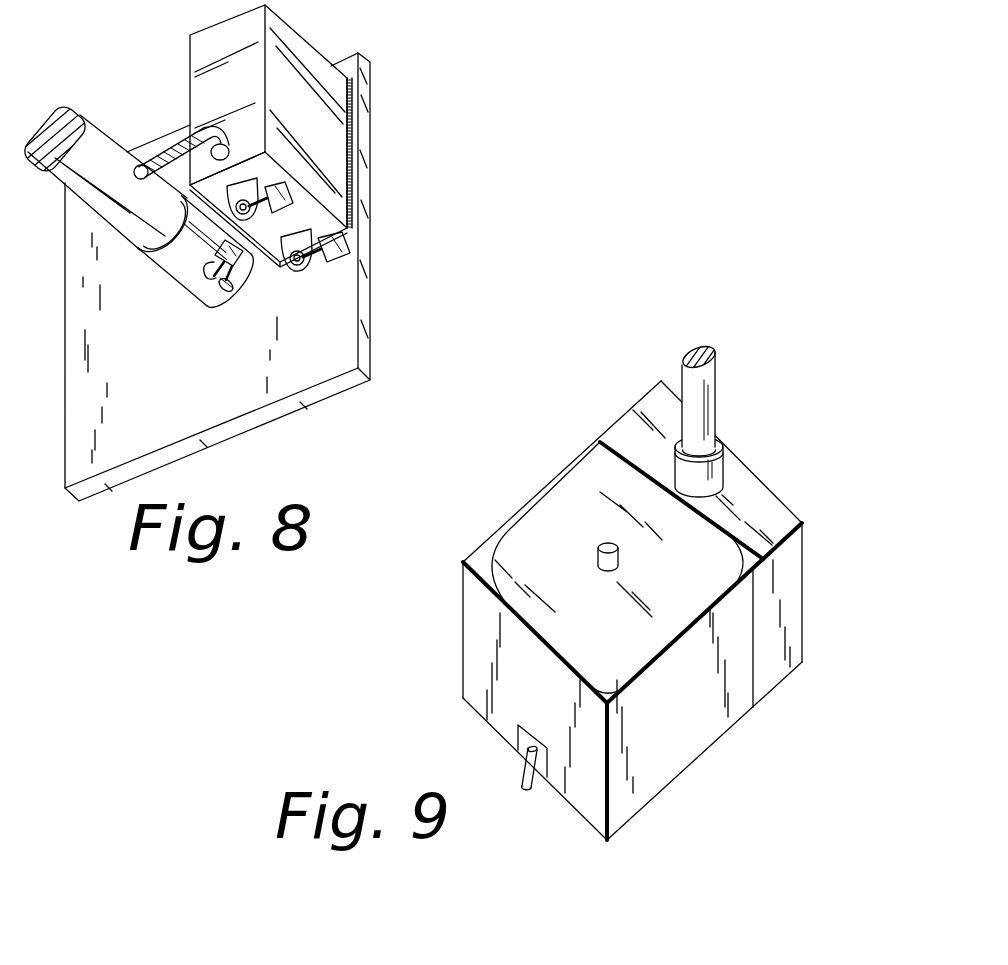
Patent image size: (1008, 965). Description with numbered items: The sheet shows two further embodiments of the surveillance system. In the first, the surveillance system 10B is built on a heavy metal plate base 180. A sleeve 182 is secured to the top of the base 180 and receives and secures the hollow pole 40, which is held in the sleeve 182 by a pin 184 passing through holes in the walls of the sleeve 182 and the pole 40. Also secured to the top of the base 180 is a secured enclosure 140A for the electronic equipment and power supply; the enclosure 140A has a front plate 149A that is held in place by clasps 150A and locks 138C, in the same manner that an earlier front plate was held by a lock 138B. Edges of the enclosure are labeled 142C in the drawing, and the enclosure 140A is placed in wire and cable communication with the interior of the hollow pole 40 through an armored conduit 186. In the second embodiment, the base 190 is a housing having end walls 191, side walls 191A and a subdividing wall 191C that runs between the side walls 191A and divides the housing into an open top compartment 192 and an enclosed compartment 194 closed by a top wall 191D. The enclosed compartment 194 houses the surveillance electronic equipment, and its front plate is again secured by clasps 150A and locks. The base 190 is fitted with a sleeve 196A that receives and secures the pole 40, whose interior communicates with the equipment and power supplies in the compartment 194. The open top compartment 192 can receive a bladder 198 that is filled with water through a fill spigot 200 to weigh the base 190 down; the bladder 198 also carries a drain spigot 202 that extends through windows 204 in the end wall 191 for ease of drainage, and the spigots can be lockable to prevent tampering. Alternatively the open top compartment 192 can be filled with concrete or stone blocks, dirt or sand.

In FIG. 8, the surveillance system 10B is at (440, 168).
In FIG. 8, the hollow pole 40 is at (50, 124).
In FIG. 9, the hollow pole 40 is at (716, 397).
In FIG. 8, the lock 138B is at (245, 263).
In FIG. 8, the locks 138C is at (352, 292).
In FIG. 8, the secured enclosure 140A is at (332, 122).
In FIG. 8, the bracket edge 142C is at (190, 57).
In FIG. 8, the front plate 149A is at (333, 222).
In FIG. 8, the clasps 150A is at (296, 213).
In FIG. 8, the heavy metal plate base 180 is at (140, 367).
In FIG. 8, the sleeve 182 is at (170, 281).
In FIG. 8, the pin 184 is at (228, 290).
In FIG. 8, the armored conduit 186 is at (165, 152).
In FIG. 9, the base 190 is at (700, 783).
In FIG. 9, the end walls 191 is at (472, 630).
In FIG. 9, the side walls 191A is at (698, 730).
In FIG. 9, the subdividing wall 191C is at (608, 437).
In FIG. 9, the top wall 191D is at (758, 497).
In FIG. 9, the open top compartment 192 is at (477, 557).
In FIG. 9, the enclosed compartment 194 is at (787, 520).
In FIG. 9, the sleeve 196A is at (718, 468).
In FIG. 9, the bladder 198 is at (627, 641).
In FIG. 9, the fill spigot 200 is at (598, 557).
In FIG. 9, the drain spigot 202 is at (525, 788).
In FIG. 9, the windows 204 is at (518, 747).